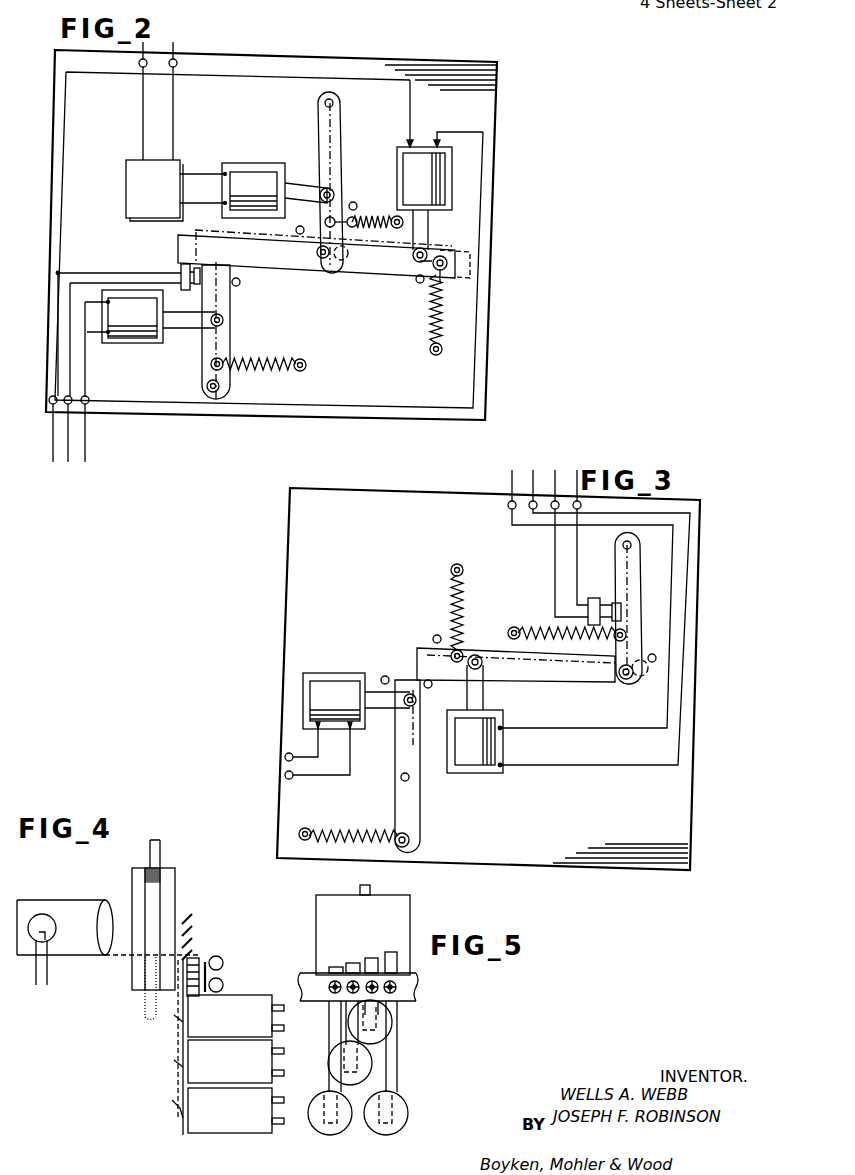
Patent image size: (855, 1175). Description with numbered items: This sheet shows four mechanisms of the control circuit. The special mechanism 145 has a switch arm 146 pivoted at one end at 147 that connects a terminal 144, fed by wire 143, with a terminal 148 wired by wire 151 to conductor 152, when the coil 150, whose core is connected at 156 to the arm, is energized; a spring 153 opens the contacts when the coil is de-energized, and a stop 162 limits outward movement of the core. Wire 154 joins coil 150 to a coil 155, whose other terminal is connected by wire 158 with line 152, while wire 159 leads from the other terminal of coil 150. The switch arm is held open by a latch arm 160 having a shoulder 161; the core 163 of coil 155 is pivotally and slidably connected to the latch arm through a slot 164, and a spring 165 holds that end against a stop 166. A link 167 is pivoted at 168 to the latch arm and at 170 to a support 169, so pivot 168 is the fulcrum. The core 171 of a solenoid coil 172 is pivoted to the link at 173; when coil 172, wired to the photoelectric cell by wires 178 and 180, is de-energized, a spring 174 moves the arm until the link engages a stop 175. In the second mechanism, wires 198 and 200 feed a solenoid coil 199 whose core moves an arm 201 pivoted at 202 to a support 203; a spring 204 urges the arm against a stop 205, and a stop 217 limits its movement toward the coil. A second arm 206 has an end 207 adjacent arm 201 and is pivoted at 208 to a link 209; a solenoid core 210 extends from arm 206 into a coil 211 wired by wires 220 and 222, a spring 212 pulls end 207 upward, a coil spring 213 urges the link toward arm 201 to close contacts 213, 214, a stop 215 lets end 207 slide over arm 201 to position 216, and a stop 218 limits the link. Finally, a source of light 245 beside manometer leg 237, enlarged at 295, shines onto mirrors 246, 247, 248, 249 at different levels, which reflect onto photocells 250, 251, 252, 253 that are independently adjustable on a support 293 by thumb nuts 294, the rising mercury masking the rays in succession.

In FIG. 2, the wire 143 is at (68, 440).
In FIG. 2, the terminal 144 is at (188, 325).
In FIG. 2, the special mechanism 145 is at (348, 340).
In FIG. 2, the switch arm 146 is at (226, 340).
In FIG. 2, the pivot 147 is at (220, 387).
In FIG. 2, the terminal 148 is at (178, 265).
In FIG. 2, the coil 150 is at (135, 330).
In FIG. 2, the wire 151 is at (94, 271).
In FIG. 2, the conductor 152 is at (57, 156).
In FIG. 2, the spring 153 is at (274, 364).
In FIG. 2, the wire 154 is at (100, 389).
In FIG. 2, the coil 155 is at (445, 181).
In FIG. 2, the core connection 156 is at (224, 321).
In FIG. 2, the wire 158 is at (410, 108).
In FIG. 2, the wire 159 is at (103, 348).
In FIG. 2, the latch arm 160 is at (302, 262).
In FIG. 2, the shoulder 161 is at (323, 246).
In FIG. 2, the stop 162 is at (240, 285).
In FIG. 2, the core 163 is at (423, 228).
In FIG. 2, the slot 164 is at (406, 270).
In FIG. 2, the spring 165 is at (430, 318).
In FIG. 2, the stop 166 is at (440, 292).
In FIG. 2, the link 167 is at (330, 155).
In FIG. 2, the pivot 168 is at (330, 268).
In FIG. 2, the support 169 is at (490, 113).
In FIG. 2, the pivot 170 is at (335, 103).
In FIG. 2, the core 171 is at (296, 185).
In FIG. 2, the solenoid coil 172 is at (250, 180).
In FIG. 2, the pivot 173 is at (335, 190).
In FIG. 2, the spring 174 is at (368, 215).
In FIG. 2, the stop 175 is at (364, 185).
In FIG. 2, the wire 178 is at (104, 110).
In FIG. 2, the wire 180 is at (175, 125).
In FIG. 3, the wire 198 is at (285, 757).
In FIG. 3, the solenoid coil 199 is at (328, 690).
In FIG. 3, the wire 200 is at (262, 775).
In FIG. 3, the arm 201 is at (422, 803).
In FIG. 3, the pivot point 202 is at (400, 780).
In FIG. 3, the support 203 is at (528, 845).
In FIG. 3, the spring 204 is at (338, 822).
In FIG. 3, the stop 205 is at (432, 690).
In FIG. 3, the second arm 206 is at (592, 684).
In FIG. 3, the end of arm 207 is at (422, 650).
In FIG. 3, the pivot 208 is at (630, 680).
In FIG. 3, the link 209 is at (632, 615).
In FIG. 3, the solenoid core 210 is at (484, 696).
In FIG. 3, the coil 211 is at (500, 746).
In FIG. 3, the spring 212 is at (464, 600).
In FIG. 3, the coil spring / contact 213 is at (594, 598).
In FIG. 3, the contact 214 is at (620, 612).
In FIG. 3, the stop 215 is at (446, 630).
In FIG. 3, the position 216 is at (417, 660).
In FIG. 3, the stop 217 is at (381, 677).
In FIG. 3, the stop 218 is at (656, 657).
In FIG. 3, the wire 220 is at (600, 765).
In FIG. 3, the wire 222 is at (622, 730).
In FIG. 4, the leg of manometer 237 is at (160, 852).
In FIG. 4, the source of light 245 is at (72, 951).
In FIG. 4, the mirror 246 is at (193, 955).
In FIG. 5, the mirror 246 is at (333, 967).
In FIG. 4, the mirror 247 is at (193, 942).
In FIG. 5, the mirror 247 is at (351, 963).
In FIG. 4, the mirror 248 is at (193, 930).
In FIG. 5, the mirror 248 is at (370, 958).
In FIG. 4, the mirror 249 is at (192, 916).
In FIG. 5, the mirror 249 is at (392, 952).
In FIG. 4, the photocell 250 is at (252, 1120).
In FIG. 5, the photocell 250 is at (340, 1130).
In FIG. 4, the photocell 251 is at (250, 1071).
In FIG. 5, the photocell 251 is at (372, 1060).
In FIG. 4, the photocell 252 is at (258, 1034).
In FIG. 5, the photocell 252 is at (392, 1022).
In FIG. 5, the photocell 253 is at (408, 1115).
In FIG. 4, the support 293 is at (200, 995).
In FIG. 5, the support 293 is at (416, 990).
In FIG. 4, the thumb nuts 294 is at (223, 963).
In FIG. 5, the thumb nuts 294 is at (400, 975).
In FIG. 4, the enlargement 295 is at (175, 892).
In FIG. 5, the enlargement 295 is at (402, 925).